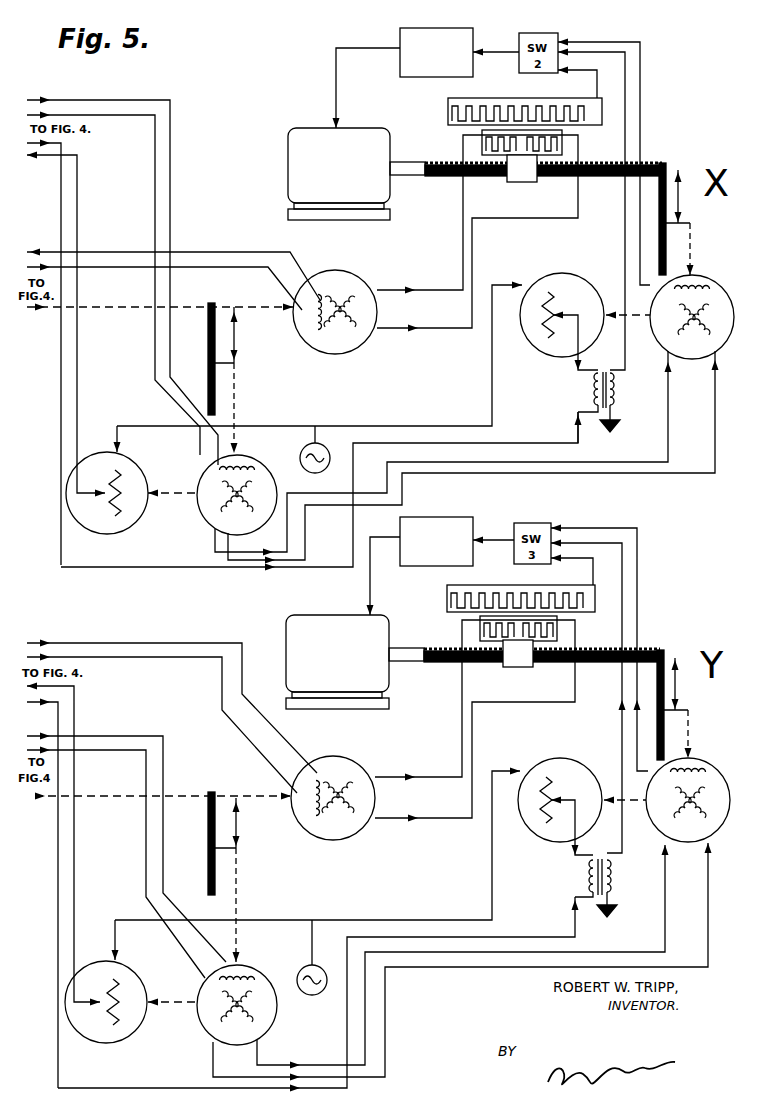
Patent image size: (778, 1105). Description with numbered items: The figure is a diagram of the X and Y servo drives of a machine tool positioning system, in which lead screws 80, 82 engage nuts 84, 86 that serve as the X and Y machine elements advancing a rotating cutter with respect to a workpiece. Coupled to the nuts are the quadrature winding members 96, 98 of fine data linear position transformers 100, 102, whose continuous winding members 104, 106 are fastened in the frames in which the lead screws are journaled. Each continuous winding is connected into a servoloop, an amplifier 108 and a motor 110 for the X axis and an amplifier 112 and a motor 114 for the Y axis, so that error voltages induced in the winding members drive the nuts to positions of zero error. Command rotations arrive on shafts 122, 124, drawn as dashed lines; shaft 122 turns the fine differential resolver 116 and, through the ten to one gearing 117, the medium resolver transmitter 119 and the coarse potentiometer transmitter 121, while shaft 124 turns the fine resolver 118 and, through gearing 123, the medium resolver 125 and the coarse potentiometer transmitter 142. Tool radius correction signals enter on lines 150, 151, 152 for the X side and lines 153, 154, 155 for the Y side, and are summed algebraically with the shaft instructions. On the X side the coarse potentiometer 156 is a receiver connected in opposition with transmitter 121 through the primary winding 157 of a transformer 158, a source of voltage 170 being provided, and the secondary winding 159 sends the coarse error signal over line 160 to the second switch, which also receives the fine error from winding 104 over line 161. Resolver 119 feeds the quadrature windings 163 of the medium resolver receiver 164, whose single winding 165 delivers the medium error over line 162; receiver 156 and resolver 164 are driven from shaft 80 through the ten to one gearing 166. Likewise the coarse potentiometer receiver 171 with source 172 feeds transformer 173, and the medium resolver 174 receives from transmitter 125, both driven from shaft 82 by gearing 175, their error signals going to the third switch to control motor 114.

The lead screw 80 is at (595, 176).
The lead screw 82 is at (593, 662).
The nut 84 is at (515, 182).
The nut 86 is at (515, 667).
The quadrature winding member 96 is at (562, 149).
The quadrature winding member 98 is at (557, 635).
The fine data linear position transformer 100 is at (470, 131).
The fine data linear position transformer 102 is at (468, 618).
The continuous winding member 104 is at (572, 92).
The continuous winding member 106 is at (448, 590).
The amplifier 108 is at (400, 34).
The amplifier 112 is at (452, 510).
The motor 110 is at (300, 128).
The motor 114 is at (332, 614).
The differential resolver 116 is at (345, 266).
The differential resolver 118 is at (354, 764).
The 10 to 1 gearing 117 is at (204, 350).
The gearing 123 is at (208, 792).
The medium resolver transmitter 119 is at (236, 460).
The resolver 125 is at (201, 1029).
The coarse potentiometer transmitter 121 is at (94, 454).
The coarse potentiometer transmitter 142 is at (140, 990).
The shaft 122 is at (247, 312).
The shaft 124 is at (28, 798).
The line 150 is at (113, 260).
The line 151 is at (113, 108).
The line 152 is at (77, 198).
The line 153 is at (98, 651).
The line 154 is at (134, 743).
The line 155 is at (74, 705).
The coarse potentiometer 156 is at (533, 280).
The primary winding 157 is at (575, 408).
The transformer 158 is at (600, 370).
The secondary winding 159 is at (614, 392).
The line 160 is at (612, 52).
The line 161 is at (588, 80).
The medium error signal line 162 is at (632, 86).
The quadrature windings 163 is at (712, 342).
The medium resolver receiver 164 is at (692, 360).
The single winding 165 is at (712, 289).
The 10 to 1 gearing 166 is at (663, 164).
The source of voltage 170 is at (312, 472).
The coarse potentiometer receiver 171 is at (531, 771).
The source 172 is at (312, 998).
The transformer 173 is at (610, 884).
The medium resolver 174 is at (718, 783).
The 10 to 1 gearing 175 is at (662, 652).